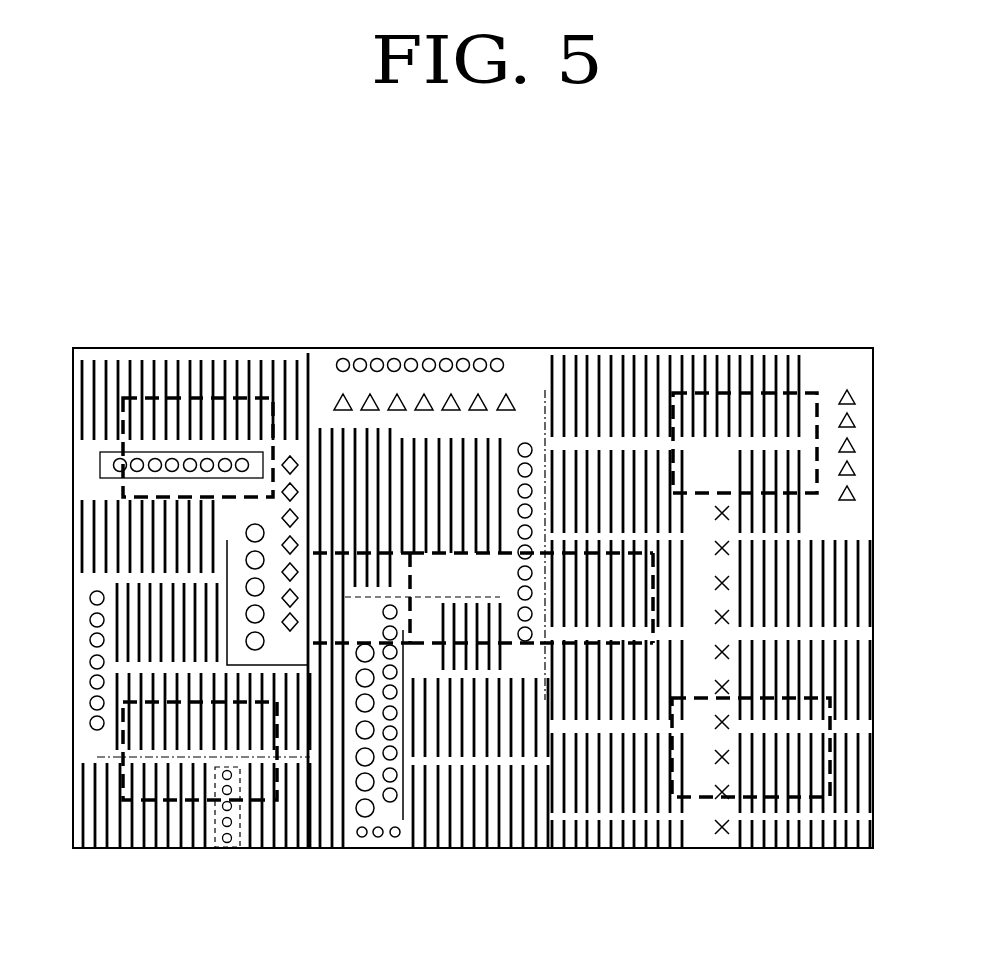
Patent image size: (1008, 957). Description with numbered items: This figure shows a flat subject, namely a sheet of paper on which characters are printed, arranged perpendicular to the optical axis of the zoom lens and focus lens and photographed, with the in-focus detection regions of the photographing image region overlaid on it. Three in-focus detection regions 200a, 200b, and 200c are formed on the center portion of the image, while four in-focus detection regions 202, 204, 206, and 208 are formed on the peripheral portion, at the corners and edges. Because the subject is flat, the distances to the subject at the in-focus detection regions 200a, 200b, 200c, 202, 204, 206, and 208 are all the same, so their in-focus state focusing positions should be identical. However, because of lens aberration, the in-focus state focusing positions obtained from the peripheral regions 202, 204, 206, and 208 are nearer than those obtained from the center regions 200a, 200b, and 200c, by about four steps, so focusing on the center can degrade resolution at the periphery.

The in-focus detection region 202 is at (173, 392).
The in-focus detection region 200a is at (313, 547).
The in-focus detection region 200b is at (432, 550).
The in-focus detection region 200c is at (558, 547).
The in-focus detection region 204 is at (778, 393).
The in-focus detection region 206 is at (233, 805).
The in-focus detection region 208 is at (710, 800).